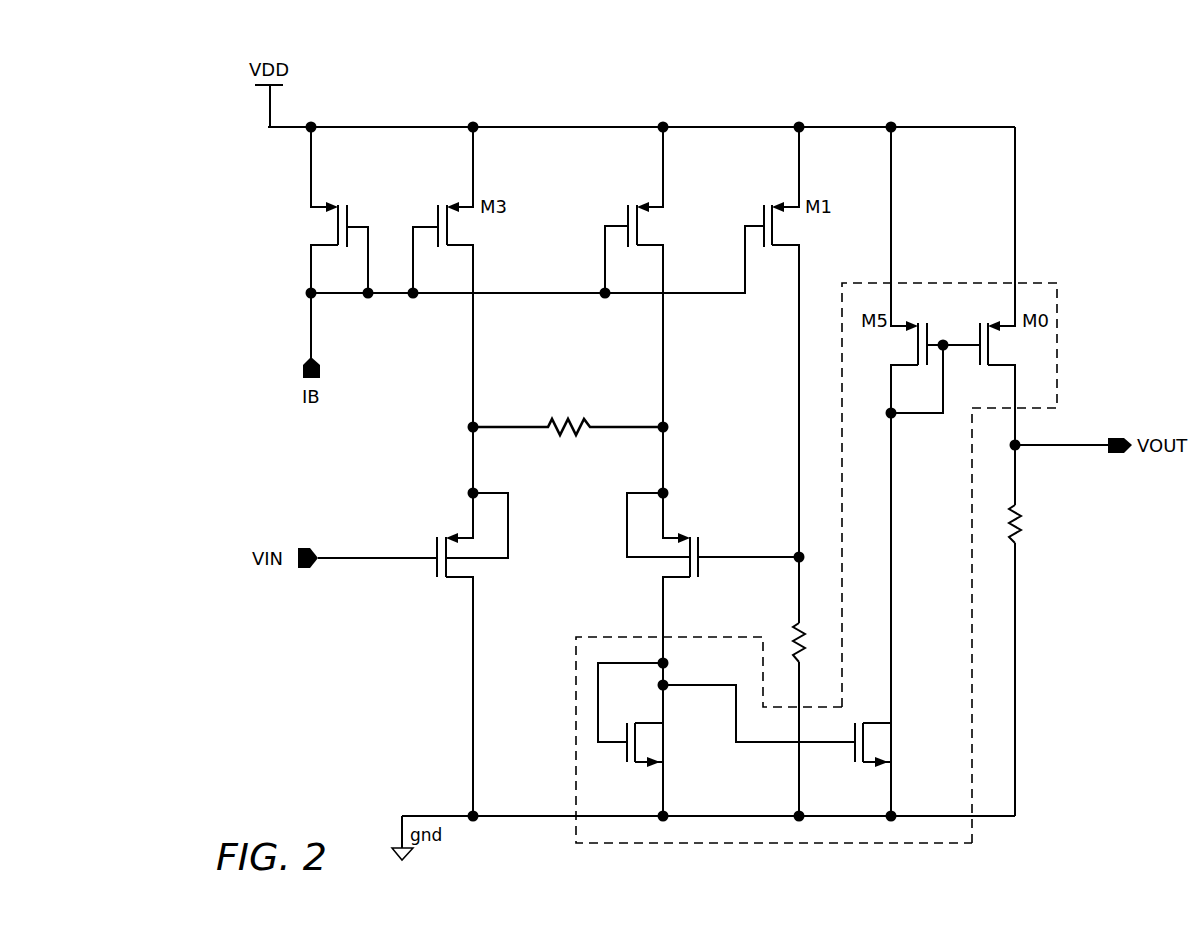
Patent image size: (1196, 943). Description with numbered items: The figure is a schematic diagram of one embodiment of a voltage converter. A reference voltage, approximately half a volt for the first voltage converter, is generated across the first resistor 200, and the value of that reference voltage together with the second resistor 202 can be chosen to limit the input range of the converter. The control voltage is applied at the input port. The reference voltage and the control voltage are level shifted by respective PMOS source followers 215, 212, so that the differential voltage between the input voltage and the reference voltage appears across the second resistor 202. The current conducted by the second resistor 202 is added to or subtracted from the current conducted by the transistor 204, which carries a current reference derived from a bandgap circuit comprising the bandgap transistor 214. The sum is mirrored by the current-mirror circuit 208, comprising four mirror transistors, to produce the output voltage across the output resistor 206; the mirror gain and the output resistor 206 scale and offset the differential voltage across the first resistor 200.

The first resistor (R1) 200 is at (796, 631).
The second resistor (R2) 202 is at (574, 435).
The transistor M2 204 is at (660, 226).
The output resistor (R0) 206 is at (1021, 521).
The current-mirror circuit 208 is at (915, 843).
The PMOS source follower (M7) 212 is at (489, 560).
The transistor M4 214 is at (305, 226).
The PMOS source follower (M6) 215 is at (642, 558).